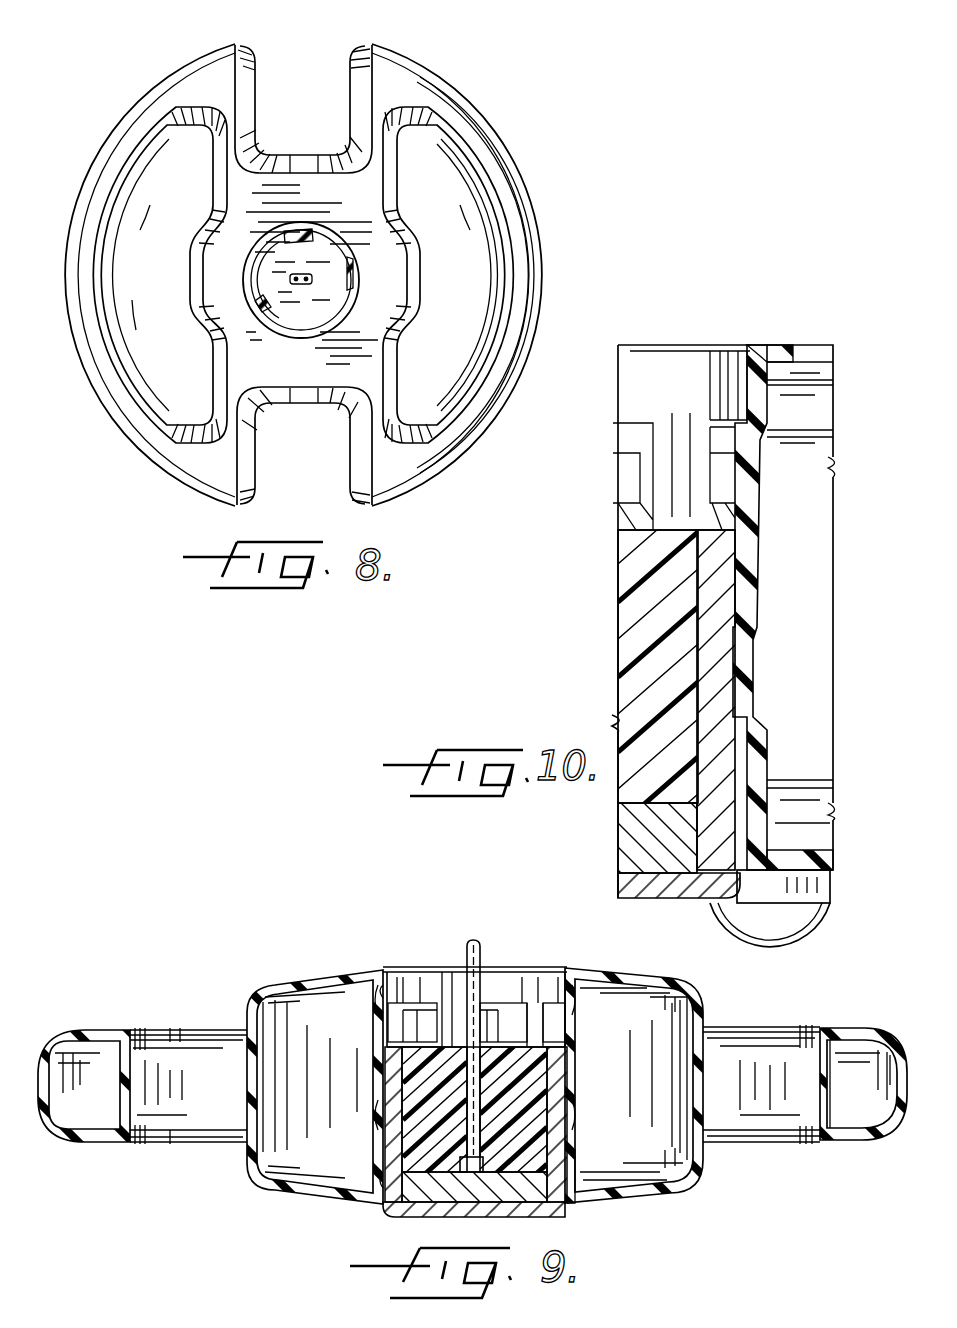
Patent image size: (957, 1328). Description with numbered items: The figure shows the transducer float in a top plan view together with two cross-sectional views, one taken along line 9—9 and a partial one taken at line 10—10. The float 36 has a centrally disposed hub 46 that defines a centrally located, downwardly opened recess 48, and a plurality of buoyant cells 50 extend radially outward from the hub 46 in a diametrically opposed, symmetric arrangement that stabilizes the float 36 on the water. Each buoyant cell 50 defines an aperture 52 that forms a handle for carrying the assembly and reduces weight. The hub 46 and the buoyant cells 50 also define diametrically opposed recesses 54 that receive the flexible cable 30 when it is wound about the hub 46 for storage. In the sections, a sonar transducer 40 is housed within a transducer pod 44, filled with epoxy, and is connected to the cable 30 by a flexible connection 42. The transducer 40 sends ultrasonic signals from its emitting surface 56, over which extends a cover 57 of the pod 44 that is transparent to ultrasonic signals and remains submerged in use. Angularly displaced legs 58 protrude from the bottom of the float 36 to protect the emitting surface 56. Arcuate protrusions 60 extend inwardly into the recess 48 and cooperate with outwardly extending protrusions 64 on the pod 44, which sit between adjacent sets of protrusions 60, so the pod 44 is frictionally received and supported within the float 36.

In FIG. 8, the section line 9— 9 is at (240, 258).
In FIG. 8, the section line 10— 10 is at (377, 245).
In FIG. 9, the flexible cable 30 is at (480, 960).
In FIG. 8, the float 36 is at (153, 470).
In FIG. 10, the float 36 is at (640, 396).
In FIG. 9, the float 36 is at (130, 1142).
In FIG. 10, the sonar transducer 40 is at (640, 838).
In FIG. 9, the sonar transducer 40 is at (537, 1213).
In FIG. 9, the flexible connection 42 is at (560, 1180).
In FIG. 10, the transducer pod 44 is at (720, 762).
In FIG. 9, the transducer pod 44 is at (395, 1160).
In FIG. 8, the hub 46 is at (305, 190).
In FIG. 10, the hub 46 is at (795, 347).
In FIG. 9, the hub 46 is at (368, 973).
In FIG. 8, the recess 48 is at (270, 298).
In FIG. 10, the recess 48 is at (693, 365).
In FIG. 9, the recess 48 is at (442, 985).
In FIG. 8, the buoyant cells 50 is at (433, 112).
In FIG. 9, the buoyant cells 50 is at (820, 1030).
In FIG. 8, the aperture 52 is at (463, 243).
In FIG. 9, the aperture 52 is at (197, 1099).
In FIG. 8, the recesses 54 is at (276, 118).
In FIG. 10, the emitting surface 56 is at (640, 873).
In FIG. 9, the emitting surface 56 is at (413, 1217).
In FIG. 10, the cover 57 is at (673, 888).
In FIG. 9, the cover 57 is at (465, 1193).
In FIG. 10, the legs 58 is at (770, 935).
In FIG. 8, the arcuate protrusions 60 is at (307, 238).
In FIG. 10, the arcuate protrusions 60 is at (717, 470).
In FIG. 9, the arcuate protrusions 60 is at (403, 1020).
In FIG. 10, the outwardly extending protrusions 64 is at (757, 553).
In FIG. 9, the outwardly extending protrusions 64 is at (560, 1063).